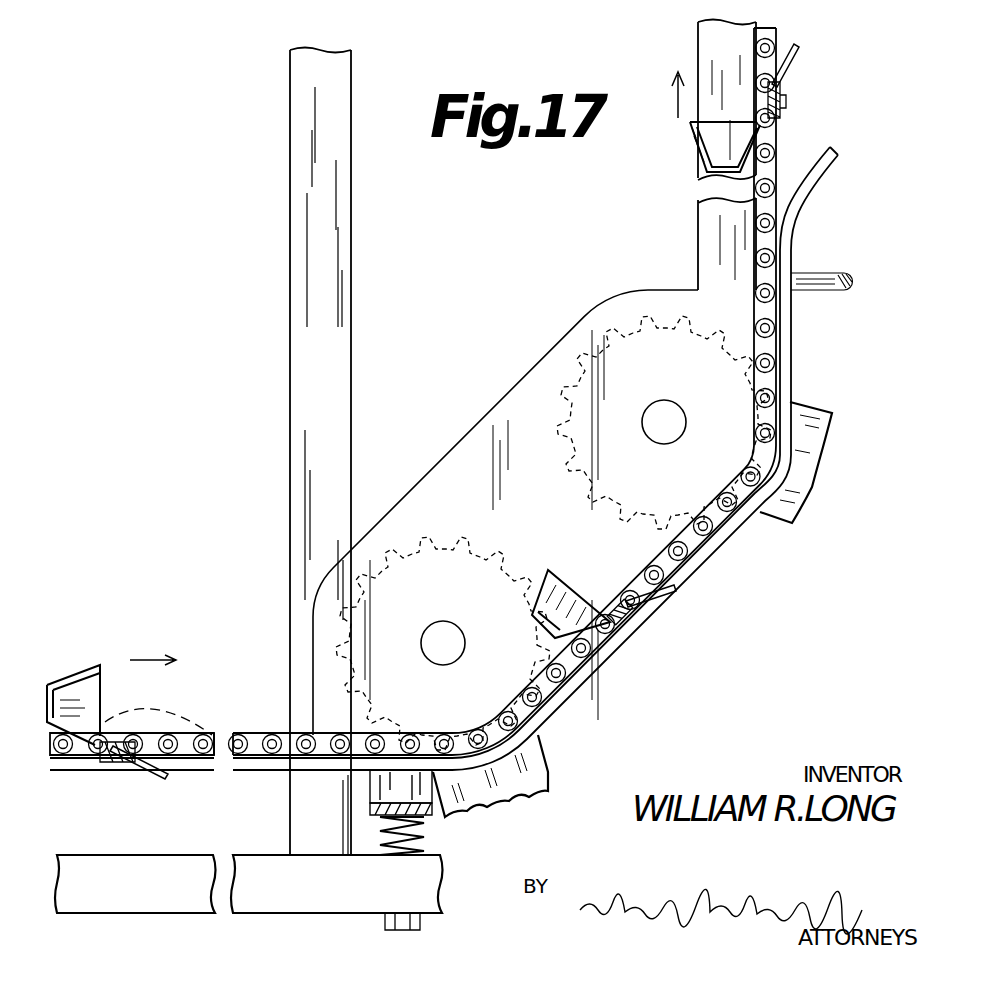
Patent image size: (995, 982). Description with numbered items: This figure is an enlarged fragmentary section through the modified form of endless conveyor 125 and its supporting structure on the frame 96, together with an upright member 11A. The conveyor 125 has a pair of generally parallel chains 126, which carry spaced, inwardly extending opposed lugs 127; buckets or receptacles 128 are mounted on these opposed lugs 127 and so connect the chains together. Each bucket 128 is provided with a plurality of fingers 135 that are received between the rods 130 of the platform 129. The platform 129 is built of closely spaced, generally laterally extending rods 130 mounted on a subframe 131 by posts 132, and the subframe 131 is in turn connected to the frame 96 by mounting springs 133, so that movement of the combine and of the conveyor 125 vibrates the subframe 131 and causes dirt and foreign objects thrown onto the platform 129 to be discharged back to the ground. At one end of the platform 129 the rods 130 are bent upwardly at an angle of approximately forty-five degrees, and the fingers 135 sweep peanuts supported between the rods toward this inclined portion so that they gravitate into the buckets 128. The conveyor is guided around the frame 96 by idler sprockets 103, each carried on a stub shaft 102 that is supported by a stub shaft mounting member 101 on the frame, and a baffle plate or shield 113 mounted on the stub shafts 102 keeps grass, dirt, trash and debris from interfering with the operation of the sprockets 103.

The frame 96 is at (298, 432).
The upright frame member 11A is at (715, 238).
The baffle plate or shield 113 is at (498, 414).
The idler sprocket 103 is at (650, 308).
The stub shaft 102 is at (662, 422).
The endless conveyor 125 is at (738, 564).
The rod 130 is at (791, 325).
The chain 126 is at (250, 746).
The platform 129 is at (205, 765).
The stub shaft mounting member 101 is at (818, 452).
The bucket or receptacle 128 is at (698, 128).
The lug 127 is at (783, 96).
The finger 135 is at (797, 50).
The post 132 is at (372, 784).
The subframe 131 is at (372, 808).
The mounting spring 133 is at (382, 840).